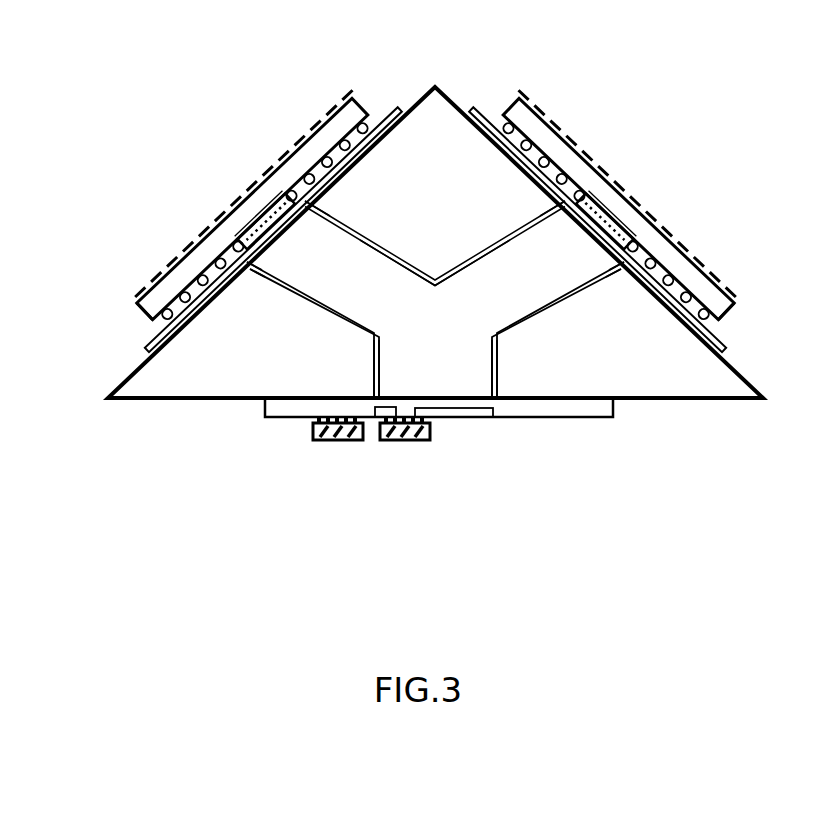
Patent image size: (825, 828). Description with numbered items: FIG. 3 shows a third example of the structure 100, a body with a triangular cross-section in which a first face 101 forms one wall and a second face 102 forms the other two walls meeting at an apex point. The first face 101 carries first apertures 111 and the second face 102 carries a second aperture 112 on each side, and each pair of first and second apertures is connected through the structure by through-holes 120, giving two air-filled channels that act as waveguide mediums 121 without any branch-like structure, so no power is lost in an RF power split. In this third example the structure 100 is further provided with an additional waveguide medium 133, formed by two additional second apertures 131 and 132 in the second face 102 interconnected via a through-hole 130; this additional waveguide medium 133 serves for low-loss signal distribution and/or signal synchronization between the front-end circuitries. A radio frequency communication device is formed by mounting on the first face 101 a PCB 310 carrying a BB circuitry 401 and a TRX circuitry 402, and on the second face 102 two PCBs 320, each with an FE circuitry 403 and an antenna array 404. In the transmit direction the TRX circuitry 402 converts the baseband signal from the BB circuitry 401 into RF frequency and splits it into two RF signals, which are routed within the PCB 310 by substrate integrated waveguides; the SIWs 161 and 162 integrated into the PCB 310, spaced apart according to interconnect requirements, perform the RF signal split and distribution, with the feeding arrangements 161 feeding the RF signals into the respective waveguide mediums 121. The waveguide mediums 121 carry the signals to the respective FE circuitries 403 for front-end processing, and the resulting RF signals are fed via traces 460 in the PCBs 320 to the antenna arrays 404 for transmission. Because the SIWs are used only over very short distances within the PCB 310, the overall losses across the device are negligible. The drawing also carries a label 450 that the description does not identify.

The structure 100 is at (702, 403).
The first face 101 is at (190, 431).
The second face 102 is at (424, 68).
The first apertures 111 is at (372, 395).
The second aperture 112 is at (250, 272).
The through-holes 120 is at (381, 371).
The waveguide mediums 121 is at (320, 310).
The through-hole 130 is at (418, 261).
The additional second aperture 131 is at (564, 213).
The additional second aperture 132 is at (304, 214).
The additional waveguide medium 133 is at (379, 254).
The feeding arrangements 161 is at (391, 406).
The SIW 162 is at (463, 412).
The PCB 310 is at (265, 406).
The PCBs 320 is at (150, 352).
The BB circuitry 401 is at (345, 441).
The TRX circuitry 402 is at (396, 441).
The FE circuitry 403 is at (213, 222).
The antenna array 404 is at (140, 316).
The light source board 450 is at (169, 272).
The traces 460 is at (283, 187).